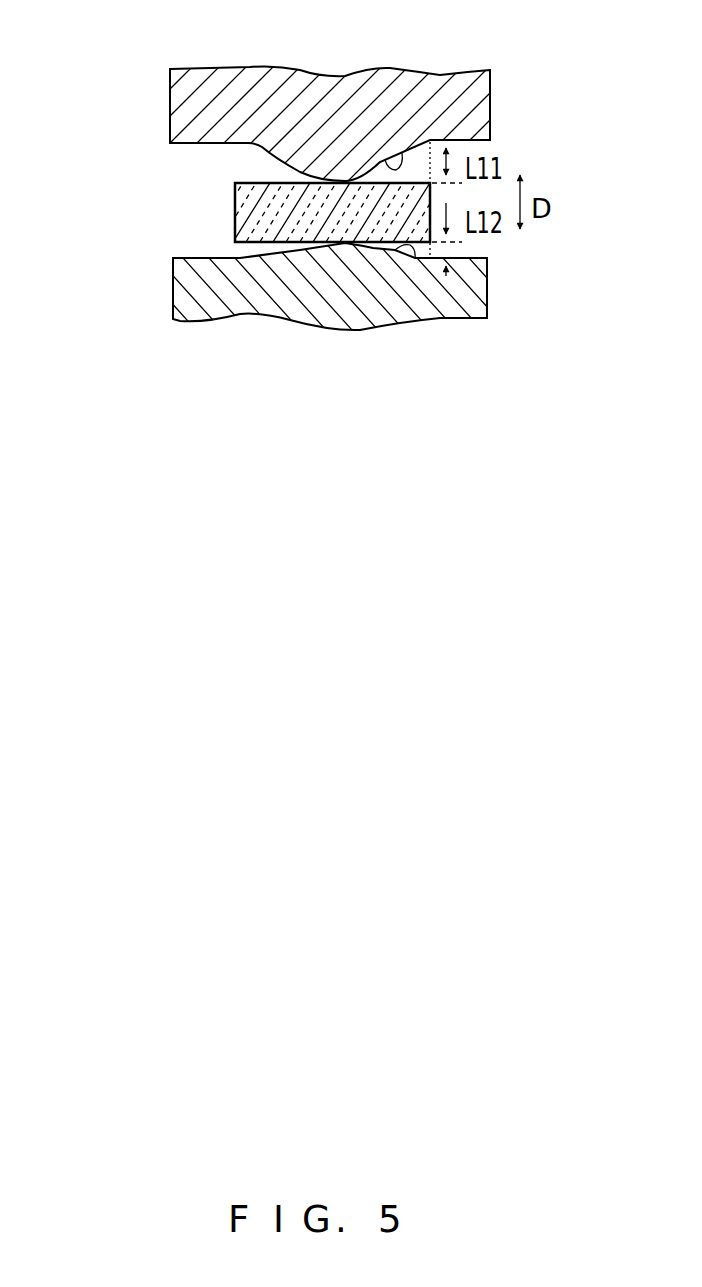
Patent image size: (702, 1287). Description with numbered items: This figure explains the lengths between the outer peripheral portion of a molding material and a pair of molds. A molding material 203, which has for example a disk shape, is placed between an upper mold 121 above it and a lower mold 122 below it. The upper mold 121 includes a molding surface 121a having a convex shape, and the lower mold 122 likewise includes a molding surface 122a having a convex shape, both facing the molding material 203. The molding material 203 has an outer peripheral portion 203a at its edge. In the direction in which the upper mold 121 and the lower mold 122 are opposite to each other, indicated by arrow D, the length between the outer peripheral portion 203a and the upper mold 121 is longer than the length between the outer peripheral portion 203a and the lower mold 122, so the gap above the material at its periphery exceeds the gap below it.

The upper mold 121 is at (312, 122).
The molding surface 121a is at (397, 160).
The molding material 203 is at (304, 210).
The outer peripheral portion 203a is at (304, 214).
The lower mold 122 is at (319, 289).
The molding surface 122a is at (413, 259).